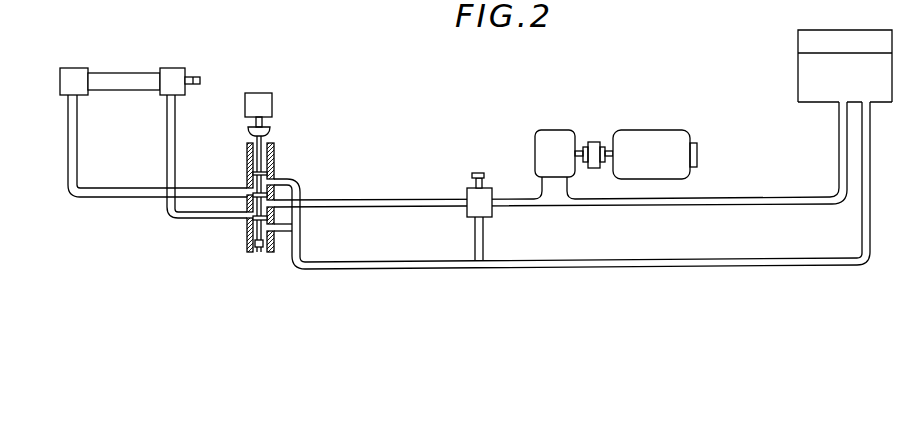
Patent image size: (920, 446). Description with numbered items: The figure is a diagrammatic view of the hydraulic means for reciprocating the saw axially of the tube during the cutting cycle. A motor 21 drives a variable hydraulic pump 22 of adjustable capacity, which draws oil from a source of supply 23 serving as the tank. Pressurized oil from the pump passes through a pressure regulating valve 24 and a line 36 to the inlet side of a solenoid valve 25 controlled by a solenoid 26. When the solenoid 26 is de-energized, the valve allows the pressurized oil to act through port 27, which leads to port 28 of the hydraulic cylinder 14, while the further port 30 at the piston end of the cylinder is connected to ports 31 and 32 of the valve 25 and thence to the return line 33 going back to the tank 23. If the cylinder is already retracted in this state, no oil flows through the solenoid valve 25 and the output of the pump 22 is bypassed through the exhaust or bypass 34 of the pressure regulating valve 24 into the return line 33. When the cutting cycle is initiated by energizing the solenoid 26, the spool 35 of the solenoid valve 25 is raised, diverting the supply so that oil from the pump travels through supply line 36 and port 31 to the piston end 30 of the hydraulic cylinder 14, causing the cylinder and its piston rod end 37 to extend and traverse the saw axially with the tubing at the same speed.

The hydraulic cylinder 14 is at (120, 78).
The motor 21 is at (633, 135).
The variable hydraulic pump 22 is at (543, 148).
The source of supply 23 is at (808, 80).
The pressure regulating valve 24 is at (470, 191).
The solenoid valve 25 is at (276, 151).
The solenoid 26 is at (258, 99).
The port 27 is at (243, 218).
The port 28 is at (167, 76).
The port at the piston end 30 is at (70, 80).
The port 31 is at (250, 189).
The port 32 is at (283, 179).
The return line 33 is at (648, 258).
The exhaust or bypass 34 is at (487, 218).
The spool 35 is at (259, 249).
The line 36 is at (318, 199).
The piston rod end 37 is at (200, 74).